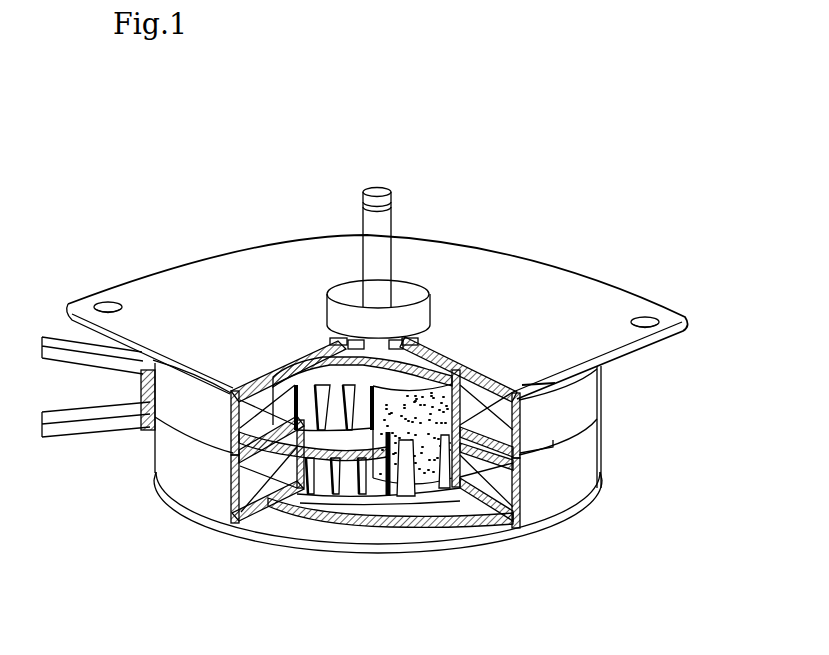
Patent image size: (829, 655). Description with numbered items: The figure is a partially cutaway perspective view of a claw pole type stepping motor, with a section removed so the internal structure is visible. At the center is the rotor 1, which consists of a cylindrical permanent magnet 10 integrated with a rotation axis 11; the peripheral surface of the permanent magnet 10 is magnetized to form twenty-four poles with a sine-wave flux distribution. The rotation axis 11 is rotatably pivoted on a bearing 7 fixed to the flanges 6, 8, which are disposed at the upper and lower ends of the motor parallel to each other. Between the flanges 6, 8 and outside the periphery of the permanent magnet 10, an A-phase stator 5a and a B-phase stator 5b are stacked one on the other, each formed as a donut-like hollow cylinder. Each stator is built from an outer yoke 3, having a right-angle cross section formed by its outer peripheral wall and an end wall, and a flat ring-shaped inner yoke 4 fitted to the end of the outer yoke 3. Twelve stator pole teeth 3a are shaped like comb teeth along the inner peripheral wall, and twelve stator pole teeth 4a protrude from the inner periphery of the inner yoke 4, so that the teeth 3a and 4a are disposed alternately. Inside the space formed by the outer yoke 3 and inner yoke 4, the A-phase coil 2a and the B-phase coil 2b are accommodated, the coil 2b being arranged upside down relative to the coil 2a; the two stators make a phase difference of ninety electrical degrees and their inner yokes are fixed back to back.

The rotor 1 is at (491, 108).
The A-phase coil 2a is at (236, 390).
The B-phase coil 2b is at (235, 512).
The outer yoke 3 is at (301, 375).
The stator pole teeth 3a is at (236, 462).
The inner yoke 4 is at (266, 375).
The stator pole teeth 4a is at (236, 450).
The A-phase stator 5a is at (611, 364).
The B-phase stator 5b is at (611, 421).
The flange 6 is at (687, 320).
The bearing 7 is at (352, 303).
The flange 8 is at (493, 530).
The cylindrical permanent magnet 10 is at (455, 376).
The rotation axis 11 is at (382, 218).